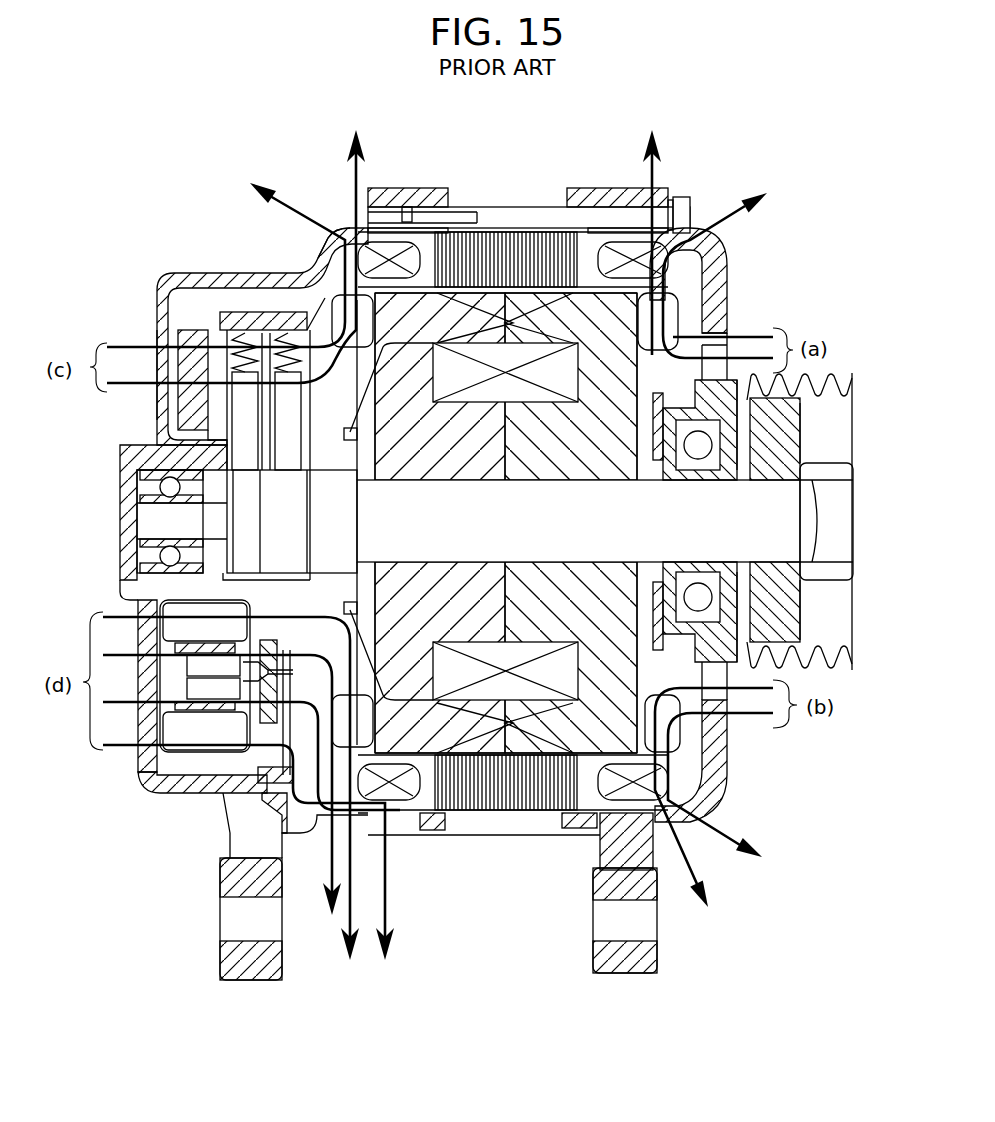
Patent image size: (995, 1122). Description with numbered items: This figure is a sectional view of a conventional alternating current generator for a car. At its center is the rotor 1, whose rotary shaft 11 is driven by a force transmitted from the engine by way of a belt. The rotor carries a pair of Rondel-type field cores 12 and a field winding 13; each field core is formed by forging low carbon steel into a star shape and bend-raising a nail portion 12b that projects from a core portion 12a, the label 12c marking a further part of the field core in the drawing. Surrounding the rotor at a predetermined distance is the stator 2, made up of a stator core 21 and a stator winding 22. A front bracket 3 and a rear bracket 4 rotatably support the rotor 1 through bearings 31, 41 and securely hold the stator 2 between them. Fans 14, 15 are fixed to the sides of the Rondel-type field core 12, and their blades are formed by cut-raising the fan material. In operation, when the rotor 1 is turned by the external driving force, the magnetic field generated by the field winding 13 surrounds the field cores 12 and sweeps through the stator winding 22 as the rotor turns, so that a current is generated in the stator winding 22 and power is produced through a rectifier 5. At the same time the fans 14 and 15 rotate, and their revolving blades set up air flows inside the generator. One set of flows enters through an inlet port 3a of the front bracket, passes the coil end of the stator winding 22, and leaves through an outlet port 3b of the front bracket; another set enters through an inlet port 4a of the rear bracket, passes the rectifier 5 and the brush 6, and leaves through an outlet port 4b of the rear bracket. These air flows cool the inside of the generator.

The rotor 1 is at (583, 293).
The stator 2 is at (495, 823).
The front bracket 3 is at (720, 292).
The inlet port of the front bracket 3a is at (720, 327).
The outlet port of the front bracket 3b is at (708, 227).
The rear bracket 4 is at (182, 275).
The inlet port of the rear bracket 4a is at (157, 340).
The outlet port of the rear bracket 4b is at (343, 227).
The rectifier 5 is at (207, 733).
The brush 6 is at (245, 423).
The rotary shaft 11 is at (773, 520).
The Rondel-type field core 12 is at (418, 360).
The core portion 12a is at (555, 345).
The nail portion 12b is at (530, 340).
The claw-shaped magnetic poles 12c is at (383, 290).
The field winding 13 is at (495, 350).
The fan 14 is at (680, 300).
The fan 15 is at (337, 310).
The stator core 21 is at (527, 825).
The stator winding 22 is at (410, 805).
The bearing 31 is at (722, 619).
The bearing 41 is at (123, 562).